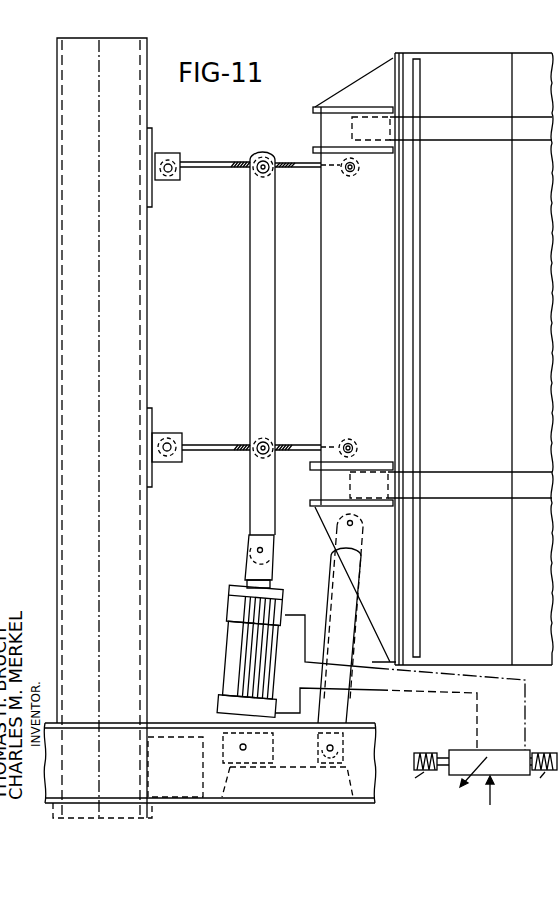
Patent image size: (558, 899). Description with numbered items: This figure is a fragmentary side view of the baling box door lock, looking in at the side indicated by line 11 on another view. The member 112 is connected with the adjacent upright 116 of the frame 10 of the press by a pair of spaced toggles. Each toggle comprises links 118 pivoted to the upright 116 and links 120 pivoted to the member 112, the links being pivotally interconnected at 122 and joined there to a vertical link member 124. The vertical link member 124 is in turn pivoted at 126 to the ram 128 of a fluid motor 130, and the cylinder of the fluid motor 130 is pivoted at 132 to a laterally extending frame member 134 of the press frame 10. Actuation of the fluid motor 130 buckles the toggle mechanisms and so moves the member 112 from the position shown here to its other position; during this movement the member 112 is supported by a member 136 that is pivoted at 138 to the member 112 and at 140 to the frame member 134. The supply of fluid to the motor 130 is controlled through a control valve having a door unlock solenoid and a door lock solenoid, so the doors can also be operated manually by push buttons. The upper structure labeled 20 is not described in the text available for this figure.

The frame 10 is at (363, 751).
The line 11— 11 is at (535, 359).
The mast plates 20 is at (442, 58).
The member 112 is at (377, 335).
The upright 116 is at (77, 353).
The links 118 is at (205, 168).
The links 120 is at (302, 170).
The pivotal interconnection 122 is at (262, 157).
The vertical link member 124 is at (265, 318).
The pivot 126 is at (257, 550).
The ram 128 is at (255, 573).
The fluid motor 130 is at (233, 655).
The pivot 132 is at (242, 746).
The laterally extending frame member 134 is at (269, 752).
The member 136 is at (323, 623).
The pivot 138 is at (353, 524).
The pivot 140 is at (327, 752).